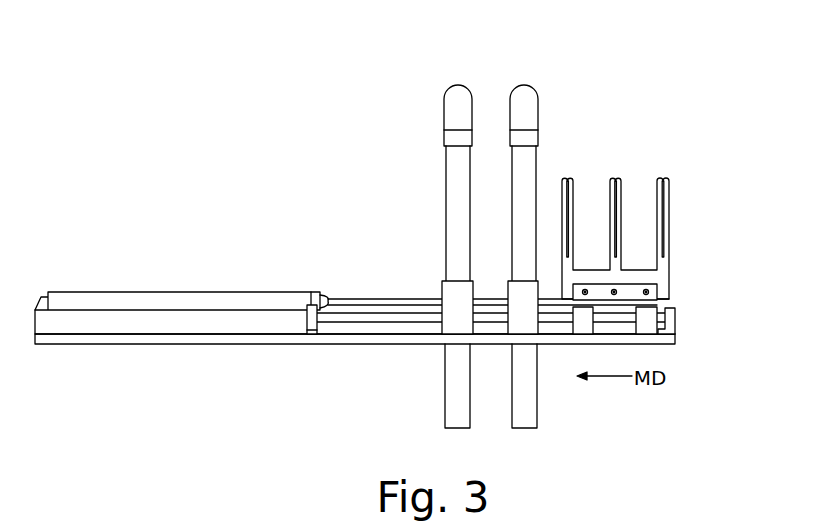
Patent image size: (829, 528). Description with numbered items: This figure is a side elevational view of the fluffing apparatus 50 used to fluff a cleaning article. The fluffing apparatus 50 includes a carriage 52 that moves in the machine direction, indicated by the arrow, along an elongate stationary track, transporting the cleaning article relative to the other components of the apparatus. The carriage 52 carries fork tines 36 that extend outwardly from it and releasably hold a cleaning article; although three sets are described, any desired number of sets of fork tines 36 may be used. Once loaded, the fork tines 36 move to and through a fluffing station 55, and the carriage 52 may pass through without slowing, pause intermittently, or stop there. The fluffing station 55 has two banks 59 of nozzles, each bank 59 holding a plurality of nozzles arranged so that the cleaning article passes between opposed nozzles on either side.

The fork tines 36 is at (663, 216).
The fluffing apparatus 50 is at (652, 428).
The carriage 52 is at (650, 293).
The fluffing station 55 is at (454, 234).
The bank of nozzles 59 is at (525, 196).